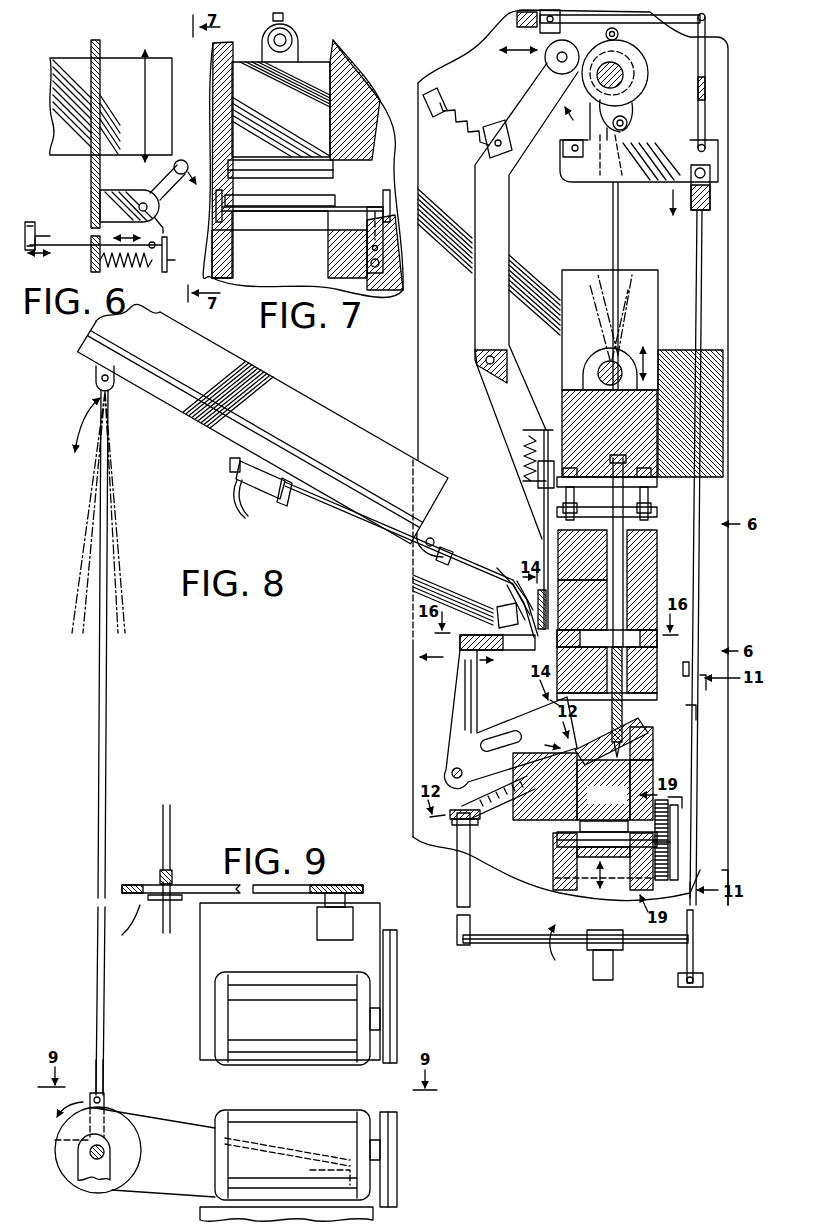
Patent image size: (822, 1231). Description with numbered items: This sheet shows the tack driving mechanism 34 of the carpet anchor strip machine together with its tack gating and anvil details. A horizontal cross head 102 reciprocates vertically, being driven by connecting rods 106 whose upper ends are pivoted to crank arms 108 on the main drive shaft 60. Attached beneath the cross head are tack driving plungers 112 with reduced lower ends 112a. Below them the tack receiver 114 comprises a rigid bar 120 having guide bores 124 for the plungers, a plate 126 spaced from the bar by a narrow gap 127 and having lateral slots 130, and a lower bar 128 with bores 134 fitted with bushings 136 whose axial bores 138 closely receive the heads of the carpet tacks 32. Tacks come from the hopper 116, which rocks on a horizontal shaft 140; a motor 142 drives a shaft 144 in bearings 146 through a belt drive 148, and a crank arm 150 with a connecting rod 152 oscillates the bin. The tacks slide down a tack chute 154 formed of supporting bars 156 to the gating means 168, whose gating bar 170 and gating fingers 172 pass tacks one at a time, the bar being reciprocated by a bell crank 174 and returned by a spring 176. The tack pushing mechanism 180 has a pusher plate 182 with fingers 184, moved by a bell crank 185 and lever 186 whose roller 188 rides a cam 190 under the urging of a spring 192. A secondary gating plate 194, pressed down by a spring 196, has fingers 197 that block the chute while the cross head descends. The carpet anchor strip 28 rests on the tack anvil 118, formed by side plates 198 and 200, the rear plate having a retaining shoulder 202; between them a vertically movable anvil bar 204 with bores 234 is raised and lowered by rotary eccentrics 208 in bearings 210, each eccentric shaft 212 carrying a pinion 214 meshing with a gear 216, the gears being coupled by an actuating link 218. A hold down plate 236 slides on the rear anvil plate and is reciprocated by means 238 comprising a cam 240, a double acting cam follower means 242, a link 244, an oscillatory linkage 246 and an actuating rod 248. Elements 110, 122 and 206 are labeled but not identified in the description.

In FIG. 8, the carpet anchor strip 28 is at (690, 730).
In FIG. 8, the carpet tacks 32 is at (520, 580).
In FIG. 8, the tack driving mechanism 34 is at (665, 407).
In FIG. 8, the drive shaft 60 is at (630, 122).
In FIG. 6, the cross head 102 is at (120, 70).
In FIG. 7, the cross head 102 is at (308, 72).
In FIG. 8, the cross head 102 is at (648, 432).
In FIG. 8, the connecting rods 106 is at (625, 243).
In FIG. 8, the crank arms 108 is at (640, 128).
In FIG. 8, the mounting plate 110 is at (660, 485).
In FIG. 8, the tack driving plungers 112 is at (640, 530).
In FIG. 8, the lower ends of tack driving plungers 112a is at (624, 705).
In FIG. 8, the tack receiver 114 is at (525, 535).
In FIG. 8, the tack hopper 116 is at (372, 370).
In FIG. 8, the tack anvil 118 is at (598, 838).
In FIG. 8, the rigid bar 120 is at (650, 590).
In FIG. 8, the side block 122 is at (650, 565).
In FIG. 8, the guide bores 124 is at (630, 548).
In FIG. 8, the plate 126 is at (650, 640).
In FIG. 8, the narrow gap 127 is at (580, 660).
In FIG. 8, the lower bar 128 is at (640, 700).
In FIG. 8, the slots 130 is at (593, 682).
In FIG. 8, the bores 134 is at (690, 668).
In FIG. 8, the bushings 136 is at (696, 712).
In FIG. 8, the axial bores 138 is at (704, 680).
In FIG. 8, the horizontal shaft 140 is at (408, 548).
In FIG. 8, the motor 142 is at (298, 984).
In FIG. 9, the motor 142 is at (298, 1165).
In FIG. 8, the shaft 144 is at (171, 830).
In FIG. 9, the shaft 144 is at (105, 1150).
In FIG. 8, the bearings 146 is at (155, 905).
In FIG. 9, the bearings 146 is at (80, 1165).
In FIG. 8, the belt drive 148 is at (277, 893).
In FIG. 9, the belt drive 148 is at (152, 1120).
In FIG. 8, the crank arm 150 is at (160, 882).
In FIG. 9, the crank arm 150 is at (95, 1140).
In FIG. 8, the connecting rod 152 is at (104, 752).
In FIG. 8, the tack chute 154 is at (438, 562).
In FIG. 8, the supporting bars 156 is at (440, 563).
In FIG. 8, the gating means 168 is at (508, 586).
In FIG. 6, the gating bar 170 is at (50, 238).
In FIG. 8, the gating bar 170 is at (515, 608).
In FIG. 6, the tack gating fingers 172 is at (30, 222).
In FIG. 8, the tack gating fingers 172 is at (497, 625).
In FIG. 6, the bell crank 174 is at (150, 192).
In FIG. 7, the bell crank 174 is at (336, 186).
In FIG. 6, the spring 176 is at (98, 266).
In FIG. 7, the spring 176 is at (368, 265).
In FIG. 8, the tack pushing mechanism 180 is at (440, 711).
In FIG. 8, the pusher plate 182 is at (458, 643).
In FIG. 8, the pusher fingers 184 is at (470, 690).
In FIG. 8, the bell crank 185 is at (463, 677).
In FIG. 8, the lever 186 is at (497, 225).
In FIG. 8, the roller 188 is at (546, 60).
In FIG. 8, the cam 190 is at (700, 65).
In FIG. 8, the spring 192 is at (471, 108).
In FIG. 8, the secondary tack gating plate 194 is at (625, 578).
In FIG. 8, the spring 196 is at (522, 462).
In FIG. 8, the fingers 197 is at (560, 755).
In FIG. 8, the rear anvil side plate 198 is at (562, 897).
In FIG. 8, the forward anvil side plate 200 is at (688, 757).
In FIG. 8, the retaining shoulder 202 is at (570, 800).
In FIG. 8, the anvil bar 204 is at (603, 790).
In FIG. 8, the bearing 206 is at (680, 858).
In FIG. 8, the rotary eccentrics 208 is at (577, 855).
In FIG. 8, the bearings 210 is at (565, 838).
In FIG. 8, the eccentric shaft 212 is at (668, 836).
In FIG. 8, the pinion 214 is at (672, 842).
In FIG. 8, the gear 216 is at (678, 817).
In FIG. 8, the actuating link 218 is at (682, 798).
In FIG. 8, the bores 234 is at (688, 773).
In FIG. 8, the hold down plate 236 is at (468, 820).
In FIG. 8, the means for reciprocating hold down plate 238 is at (710, 243).
In FIG. 8, the cam 240 is at (648, 72).
In FIG. 8, the double acting cam follower means 242 is at (710, 60).
In FIG. 8, the link 244 is at (703, 283).
In FIG. 8, the oscillatory linkage 246 is at (512, 942).
In FIG. 8, the actuating rod 248 is at (450, 828).